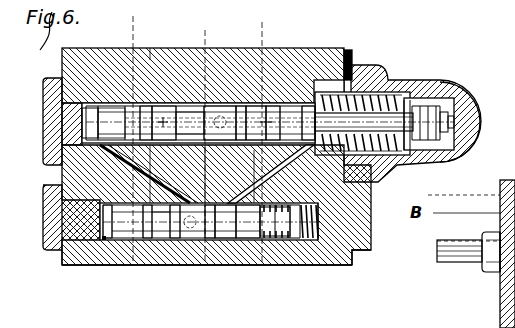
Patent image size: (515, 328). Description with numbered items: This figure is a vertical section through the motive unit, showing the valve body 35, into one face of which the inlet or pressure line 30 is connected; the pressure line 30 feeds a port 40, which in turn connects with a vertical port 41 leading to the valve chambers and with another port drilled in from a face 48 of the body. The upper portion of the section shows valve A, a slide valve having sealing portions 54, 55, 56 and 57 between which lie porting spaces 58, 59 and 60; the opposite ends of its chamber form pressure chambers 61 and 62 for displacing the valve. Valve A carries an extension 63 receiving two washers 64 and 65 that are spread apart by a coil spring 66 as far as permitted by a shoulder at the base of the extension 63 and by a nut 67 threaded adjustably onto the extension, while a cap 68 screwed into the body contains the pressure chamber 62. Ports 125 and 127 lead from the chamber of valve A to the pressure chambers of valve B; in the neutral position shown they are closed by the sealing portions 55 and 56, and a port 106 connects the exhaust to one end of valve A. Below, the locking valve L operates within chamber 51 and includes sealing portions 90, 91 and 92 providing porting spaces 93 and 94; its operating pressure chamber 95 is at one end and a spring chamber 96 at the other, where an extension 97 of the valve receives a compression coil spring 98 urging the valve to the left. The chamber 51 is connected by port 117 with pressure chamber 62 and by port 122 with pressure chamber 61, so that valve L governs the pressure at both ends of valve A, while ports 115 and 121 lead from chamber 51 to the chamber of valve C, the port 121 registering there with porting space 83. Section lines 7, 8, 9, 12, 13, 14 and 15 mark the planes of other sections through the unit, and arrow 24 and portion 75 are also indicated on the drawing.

The section line 7- 7 is at (148, 16).
The section line 8- 8 is at (219, 33).
The section line 9- 9 is at (280, 22).
The section line 12- 12 is at (33, 137).
The section line 13- 13 is at (423, 271).
The section line 14- 14 is at (33, 238).
The section line 15- 15 is at (429, 195).
The valve body 24 is at (82, 280).
The pressure line 30 is at (462, 266).
The valve body 35 is at (356, 268).
The port 40 is at (504, 294).
The vertical port 41 is at (506, 318).
The face of the valve 48 is at (62, 68).
The chamber of the valve L 51 is at (120, 240).
The sealing portion 54 is at (108, 103).
The sealing portion 55 is at (165, 103).
The sealing portion 56 is at (241, 103).
The sealing portion 57 is at (304, 103).
The porting space 58 is at (145, 103).
The porting space 59 is at (210, 103).
The porting space 60 is at (252, 103).
The pressure chamber 61 is at (82, 133).
The pressure chamber 62 is at (360, 92).
The extension 63 is at (390, 112).
The washer 64 is at (336, 60).
The washer 65 is at (414, 162).
The coil spring 66 is at (377, 150).
The nut 67 is at (446, 155).
The cap 68 is at (462, 88).
The mounting block 75 is at (512, 196).
The porting space 83 is at (169, 31).
The sealing portion 90 is at (108, 240).
The sealing portion 91 is at (192, 240).
The sealing portion 92 is at (240, 240).
The porting space 93 is at (156, 240).
The porting space 94 is at (222, 240).
The operating pressure chamber 95 is at (88, 266).
The spring chamber 96 is at (314, 240).
The extension 97 is at (272, 240).
The compression coil spring 98 is at (304, 240).
The port 106 is at (286, 103).
The port 115 is at (262, 240).
The port 117 is at (316, 103).
The port 121 is at (172, 298).
The port 122 is at (118, 160).
The port 125 is at (190, 103).
The port 127 is at (266, 28).